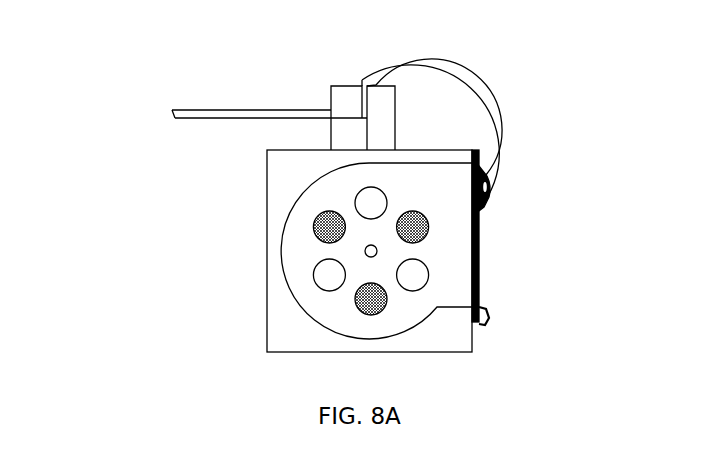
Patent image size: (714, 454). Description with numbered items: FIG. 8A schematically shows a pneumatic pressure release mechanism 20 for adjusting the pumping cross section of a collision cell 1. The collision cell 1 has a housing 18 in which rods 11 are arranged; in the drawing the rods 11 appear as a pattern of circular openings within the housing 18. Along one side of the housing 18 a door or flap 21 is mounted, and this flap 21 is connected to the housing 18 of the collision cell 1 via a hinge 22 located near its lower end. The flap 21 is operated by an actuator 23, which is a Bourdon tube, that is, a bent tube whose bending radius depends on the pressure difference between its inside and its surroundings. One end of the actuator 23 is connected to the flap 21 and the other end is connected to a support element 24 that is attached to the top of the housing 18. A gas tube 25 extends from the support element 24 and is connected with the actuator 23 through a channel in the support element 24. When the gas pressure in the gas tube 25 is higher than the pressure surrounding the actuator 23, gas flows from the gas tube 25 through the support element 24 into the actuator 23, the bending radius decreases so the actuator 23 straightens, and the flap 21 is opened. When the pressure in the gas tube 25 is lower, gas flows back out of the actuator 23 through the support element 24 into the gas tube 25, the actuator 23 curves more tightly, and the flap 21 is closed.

The collision cell 1 is at (188, 259).
The rods 11 is at (355, 300).
The collision cell housing 18 is at (267, 193).
The mechanism 20 is at (485, 191).
The flap 21 is at (479, 256).
The hinge 22 is at (478, 330).
The actuator 23 is at (468, 52).
The support element 24 is at (397, 117).
The gas tube 25 is at (232, 110).